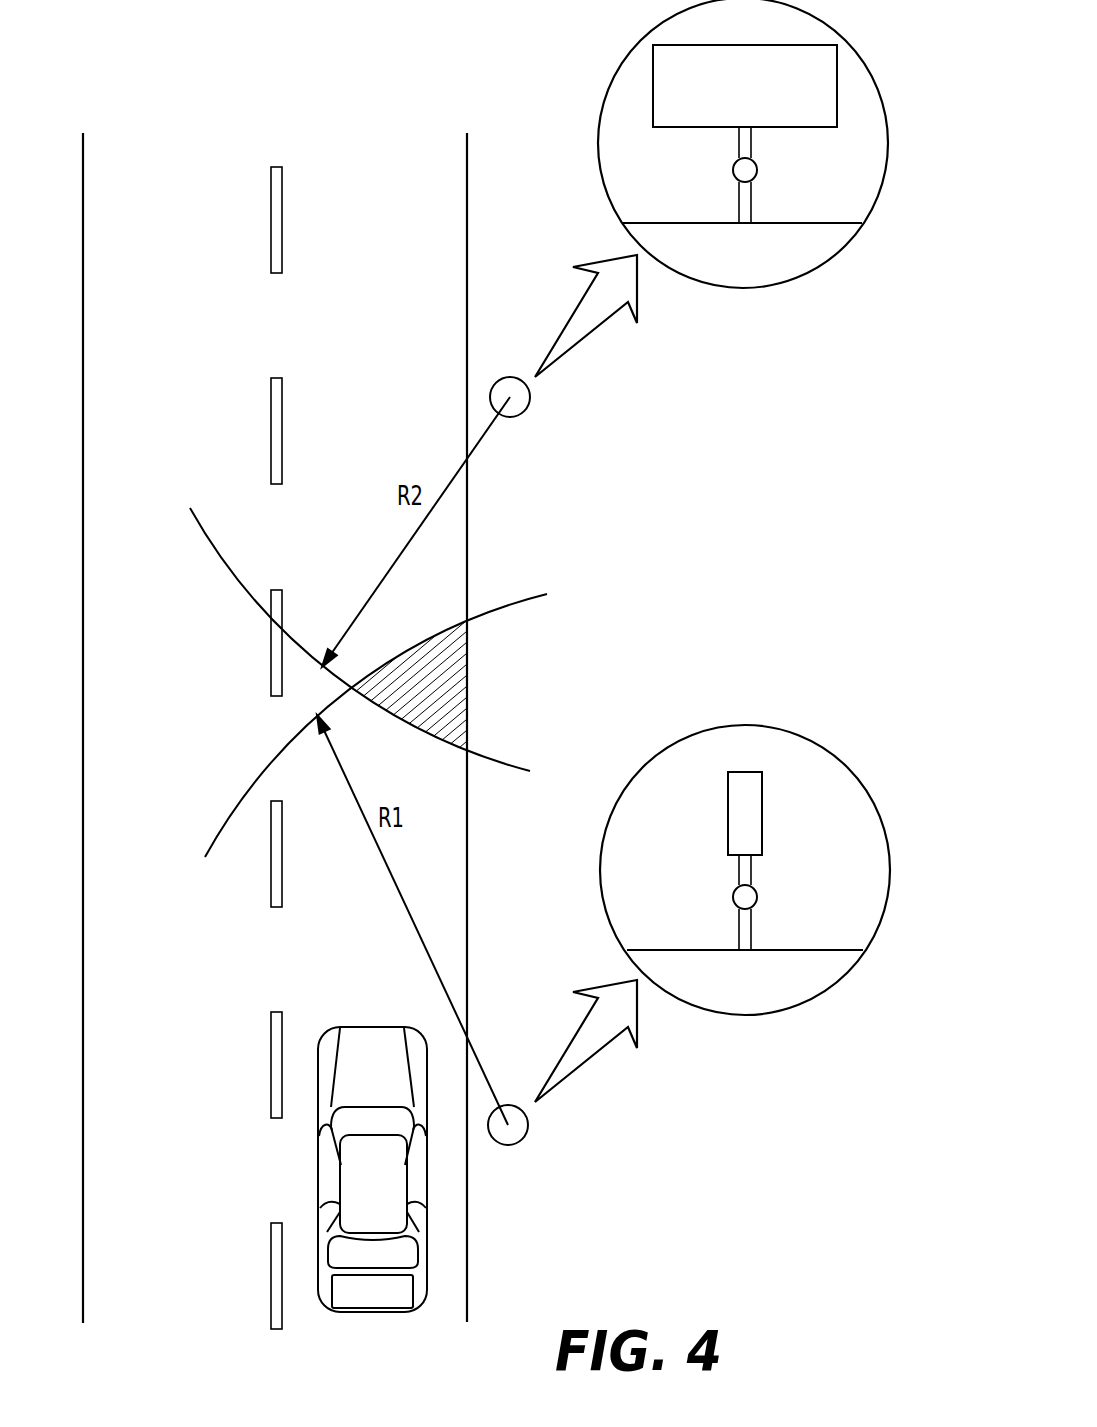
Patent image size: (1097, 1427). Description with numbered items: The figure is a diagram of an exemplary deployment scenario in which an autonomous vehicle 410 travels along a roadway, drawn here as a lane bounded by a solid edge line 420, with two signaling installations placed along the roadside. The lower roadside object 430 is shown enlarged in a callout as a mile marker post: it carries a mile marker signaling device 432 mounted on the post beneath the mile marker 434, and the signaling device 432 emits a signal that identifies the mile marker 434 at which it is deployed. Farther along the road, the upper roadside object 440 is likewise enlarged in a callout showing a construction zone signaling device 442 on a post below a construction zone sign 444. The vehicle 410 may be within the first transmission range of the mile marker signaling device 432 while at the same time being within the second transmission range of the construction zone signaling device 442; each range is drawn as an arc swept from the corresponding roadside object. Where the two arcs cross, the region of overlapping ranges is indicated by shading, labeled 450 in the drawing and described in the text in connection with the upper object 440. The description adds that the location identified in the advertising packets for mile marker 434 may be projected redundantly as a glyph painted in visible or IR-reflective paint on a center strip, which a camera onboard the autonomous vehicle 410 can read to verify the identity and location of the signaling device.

The autonomous vehicle 410 is at (428, 1262).
The lane boundary line 420 is at (468, 1207).
The first roadside object (mile marker) 430 is at (530, 1133).
The mile marker signaling device 432 is at (758, 898).
The mile marker 434 is at (762, 820).
The region of overlapping ranges 440 is at (517, 418).
The construction zone signaling device 442 is at (758, 172).
The construction zone sign 444 is at (837, 68).
The overlap region of ranges R1 and R2 450 is at (447, 693).